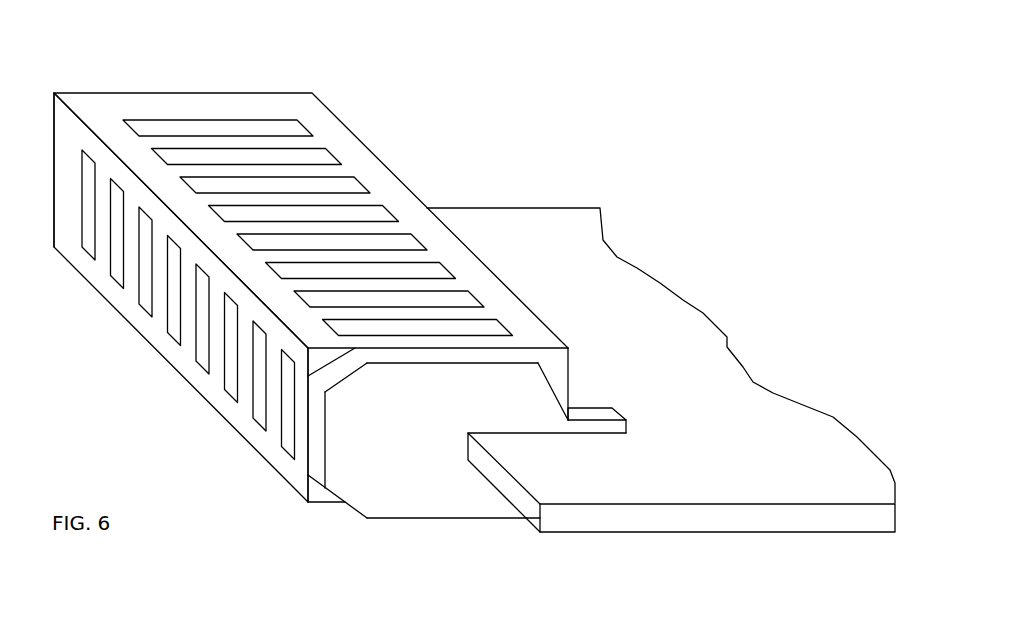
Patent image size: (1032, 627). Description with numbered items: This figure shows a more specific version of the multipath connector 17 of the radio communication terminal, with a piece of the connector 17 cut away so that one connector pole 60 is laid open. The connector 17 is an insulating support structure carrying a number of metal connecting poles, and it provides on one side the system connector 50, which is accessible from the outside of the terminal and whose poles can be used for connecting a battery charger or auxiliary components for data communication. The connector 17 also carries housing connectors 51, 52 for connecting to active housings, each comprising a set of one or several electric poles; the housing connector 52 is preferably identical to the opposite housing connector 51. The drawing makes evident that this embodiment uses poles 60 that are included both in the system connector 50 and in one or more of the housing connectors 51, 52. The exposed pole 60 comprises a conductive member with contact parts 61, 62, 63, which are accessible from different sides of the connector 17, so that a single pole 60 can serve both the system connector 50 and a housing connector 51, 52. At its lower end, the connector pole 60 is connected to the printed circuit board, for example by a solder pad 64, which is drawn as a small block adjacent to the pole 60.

The connector 17 is at (120, 93).
The system connector 50 is at (124, 293).
The housing connector 51 is at (331, 164).
The housing connector 52 is at (178, 400).
The connector pole 60 is at (467, 503).
The contact part 61 is at (298, 436).
The contact part 62 is at (455, 336).
The contact part 63 is at (423, 530).
The solder pad 64 is at (627, 420).